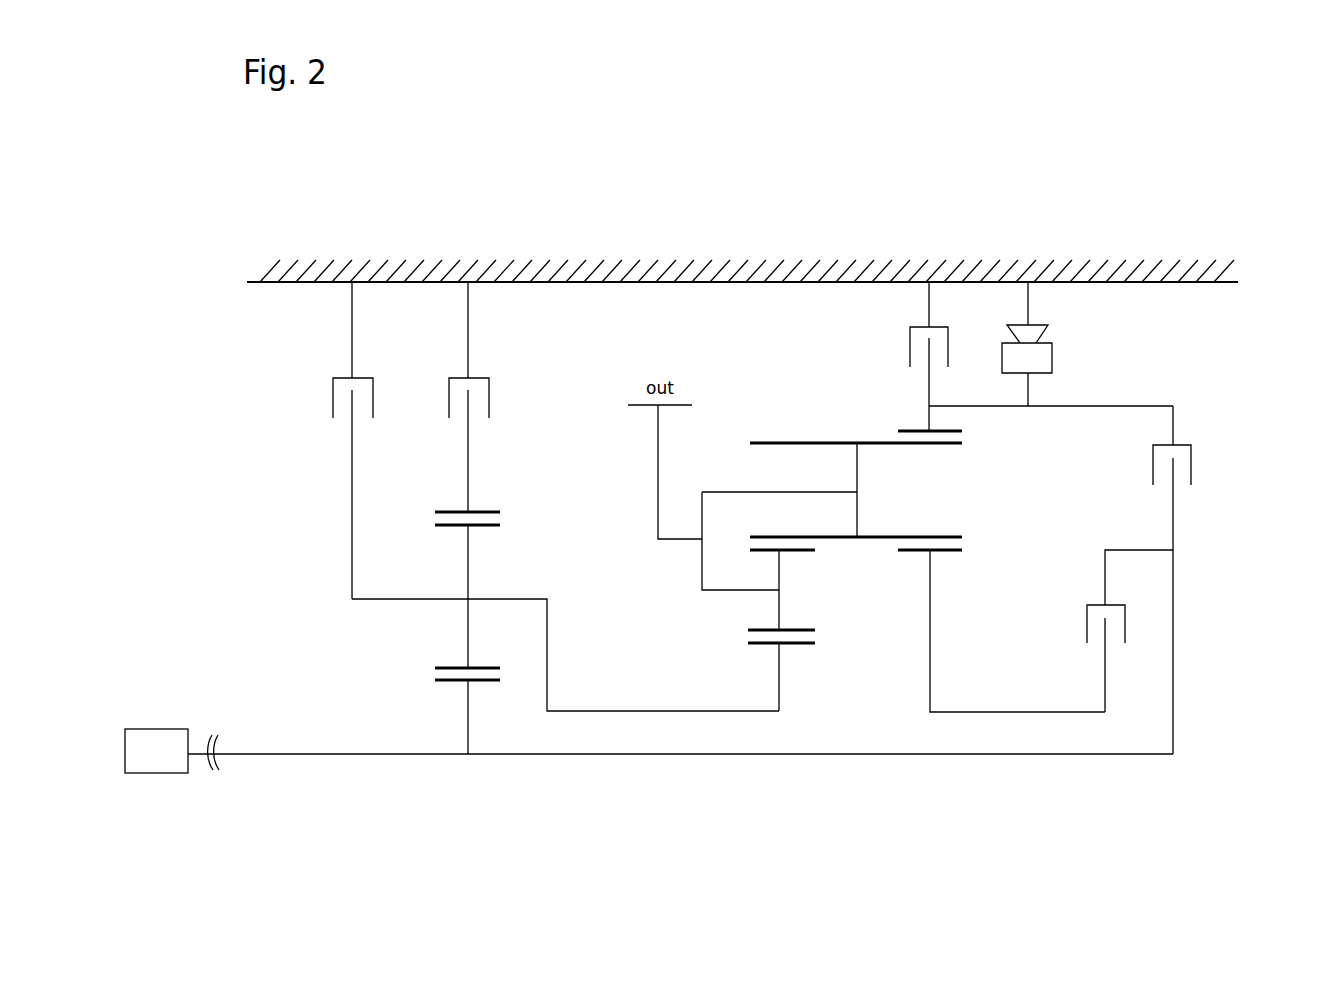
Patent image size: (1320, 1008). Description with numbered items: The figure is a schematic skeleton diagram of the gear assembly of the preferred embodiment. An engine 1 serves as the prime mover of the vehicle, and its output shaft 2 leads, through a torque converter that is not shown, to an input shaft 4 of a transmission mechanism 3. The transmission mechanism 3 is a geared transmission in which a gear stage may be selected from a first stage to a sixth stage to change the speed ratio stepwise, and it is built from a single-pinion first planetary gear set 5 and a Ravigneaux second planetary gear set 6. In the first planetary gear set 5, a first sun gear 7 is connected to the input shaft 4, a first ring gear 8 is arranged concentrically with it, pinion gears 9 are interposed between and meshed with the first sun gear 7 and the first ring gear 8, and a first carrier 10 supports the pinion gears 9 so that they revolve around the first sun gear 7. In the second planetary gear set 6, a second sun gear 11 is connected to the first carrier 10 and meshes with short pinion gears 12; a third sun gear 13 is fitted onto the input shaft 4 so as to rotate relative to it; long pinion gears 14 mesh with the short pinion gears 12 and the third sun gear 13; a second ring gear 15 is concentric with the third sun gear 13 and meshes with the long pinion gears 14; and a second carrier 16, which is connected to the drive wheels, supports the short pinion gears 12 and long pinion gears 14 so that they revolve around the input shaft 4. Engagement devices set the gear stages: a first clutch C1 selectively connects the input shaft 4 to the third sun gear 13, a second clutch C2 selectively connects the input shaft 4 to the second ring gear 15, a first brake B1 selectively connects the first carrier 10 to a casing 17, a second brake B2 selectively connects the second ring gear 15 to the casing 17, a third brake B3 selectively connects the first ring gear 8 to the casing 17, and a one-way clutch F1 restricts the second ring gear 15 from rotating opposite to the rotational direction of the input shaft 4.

The engine 1 is at (155, 762).
The output shaft 2 is at (200, 757).
The transmission mechanism 3 is at (616, 814).
The input shaft 4 is at (330, 756).
The first planetary gear set 5 is at (389, 654).
The second planetary gear set 6 is at (1187, 355).
The first sun gear 7 is at (455, 683).
The first ring gear 8 is at (490, 510).
The pinion gears 9 is at (490, 527).
The first carrier 10 is at (529, 598).
The second sun gear 11 is at (795, 646).
The short pinion gears 12 is at (800, 553).
The third sun gear 13 is at (950, 553).
The long pinion gears 14 is at (952, 446).
The second ring gear 15 is at (900, 429).
The second carrier 16 is at (720, 490).
The casing 17 is at (800, 268).
The first brake B1 is at (334, 440).
The second brake B2 is at (1022, 356).
The third brake B3 is at (486, 397).
The first clutch C1 is at (1120, 631).
The second clutch C2 is at (1182, 580).
The one-way clutch F1 is at (1045, 344).